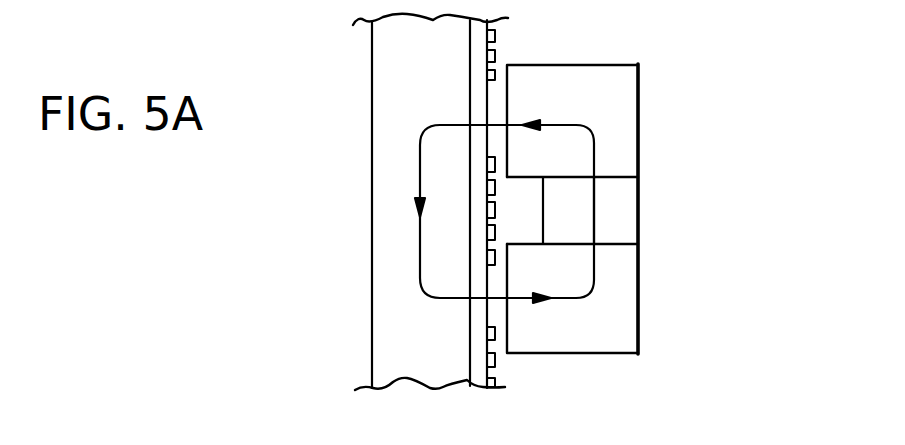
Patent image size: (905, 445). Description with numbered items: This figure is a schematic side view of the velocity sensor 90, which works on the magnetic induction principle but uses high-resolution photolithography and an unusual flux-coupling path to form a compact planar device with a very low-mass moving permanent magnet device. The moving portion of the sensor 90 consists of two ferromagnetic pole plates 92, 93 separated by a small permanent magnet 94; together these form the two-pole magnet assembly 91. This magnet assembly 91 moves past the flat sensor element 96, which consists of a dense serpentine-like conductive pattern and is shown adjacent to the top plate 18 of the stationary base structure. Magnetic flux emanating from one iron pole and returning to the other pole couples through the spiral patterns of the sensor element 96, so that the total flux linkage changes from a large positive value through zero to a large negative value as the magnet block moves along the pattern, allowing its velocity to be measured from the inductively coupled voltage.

The top plate 18 is at (382, 330).
The velocity sensor 90 is at (637, 190).
The two-pole magnet assembly 91 is at (638, 163).
The ferromagnetic pole plate 92 is at (610, 78).
The ferromagnetic pole plate 93 is at (630, 288).
The permanent magnet 94 is at (630, 220).
The flat sensor element 96 is at (493, 362).